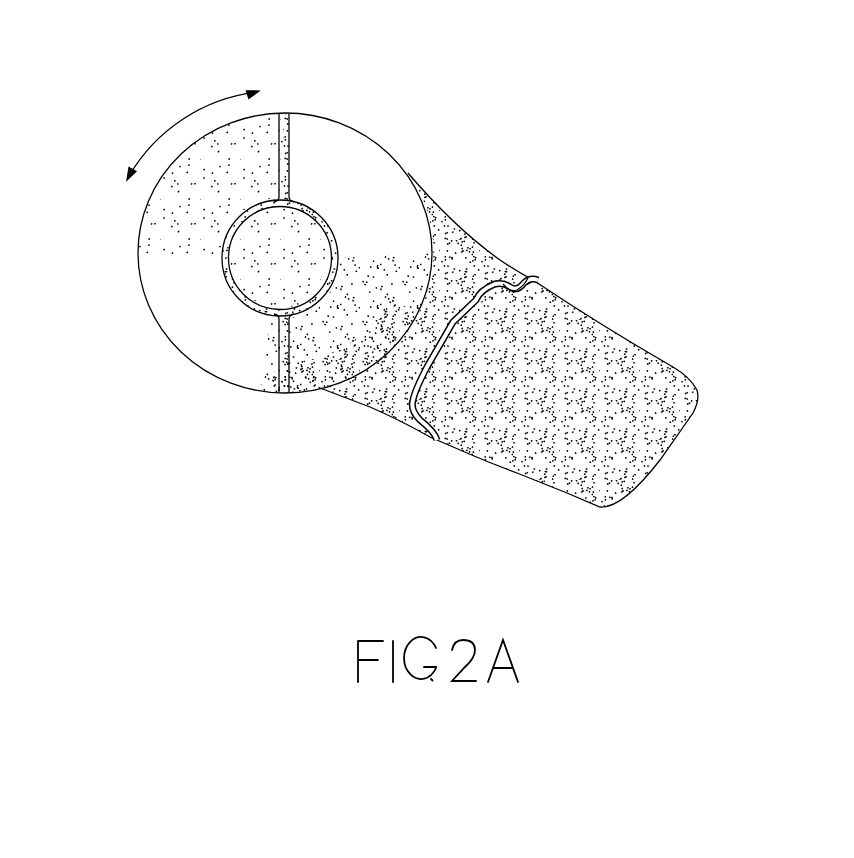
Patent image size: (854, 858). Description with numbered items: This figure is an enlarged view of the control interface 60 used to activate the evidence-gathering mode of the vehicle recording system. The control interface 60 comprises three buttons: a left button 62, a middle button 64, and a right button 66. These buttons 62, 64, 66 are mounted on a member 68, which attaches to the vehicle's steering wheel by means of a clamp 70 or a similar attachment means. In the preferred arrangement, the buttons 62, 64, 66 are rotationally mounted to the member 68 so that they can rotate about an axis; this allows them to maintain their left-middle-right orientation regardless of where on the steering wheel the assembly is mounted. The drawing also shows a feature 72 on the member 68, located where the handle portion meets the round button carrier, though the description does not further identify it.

The control interface 60 is at (397, 282).
The left button 62 is at (272, 299).
The middle button 64 is at (240, 390).
The right button 66 is at (407, 170).
The member 68 is at (472, 238).
The clamp 70 is at (526, 340).
The notch 72 is at (512, 262).